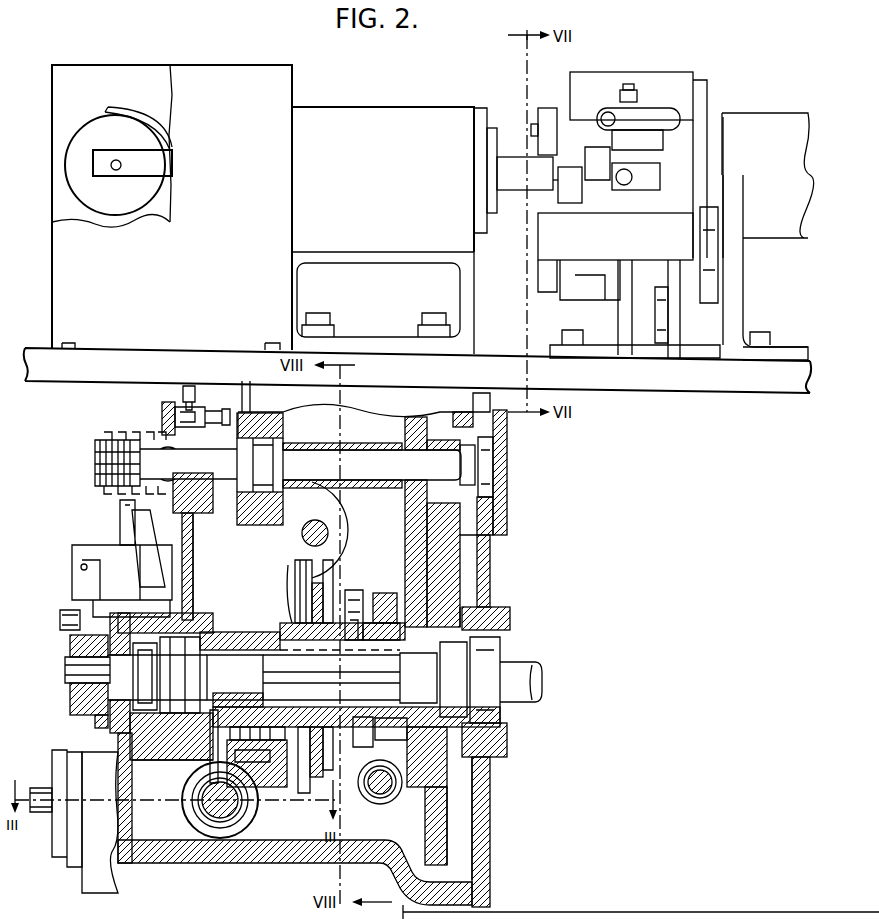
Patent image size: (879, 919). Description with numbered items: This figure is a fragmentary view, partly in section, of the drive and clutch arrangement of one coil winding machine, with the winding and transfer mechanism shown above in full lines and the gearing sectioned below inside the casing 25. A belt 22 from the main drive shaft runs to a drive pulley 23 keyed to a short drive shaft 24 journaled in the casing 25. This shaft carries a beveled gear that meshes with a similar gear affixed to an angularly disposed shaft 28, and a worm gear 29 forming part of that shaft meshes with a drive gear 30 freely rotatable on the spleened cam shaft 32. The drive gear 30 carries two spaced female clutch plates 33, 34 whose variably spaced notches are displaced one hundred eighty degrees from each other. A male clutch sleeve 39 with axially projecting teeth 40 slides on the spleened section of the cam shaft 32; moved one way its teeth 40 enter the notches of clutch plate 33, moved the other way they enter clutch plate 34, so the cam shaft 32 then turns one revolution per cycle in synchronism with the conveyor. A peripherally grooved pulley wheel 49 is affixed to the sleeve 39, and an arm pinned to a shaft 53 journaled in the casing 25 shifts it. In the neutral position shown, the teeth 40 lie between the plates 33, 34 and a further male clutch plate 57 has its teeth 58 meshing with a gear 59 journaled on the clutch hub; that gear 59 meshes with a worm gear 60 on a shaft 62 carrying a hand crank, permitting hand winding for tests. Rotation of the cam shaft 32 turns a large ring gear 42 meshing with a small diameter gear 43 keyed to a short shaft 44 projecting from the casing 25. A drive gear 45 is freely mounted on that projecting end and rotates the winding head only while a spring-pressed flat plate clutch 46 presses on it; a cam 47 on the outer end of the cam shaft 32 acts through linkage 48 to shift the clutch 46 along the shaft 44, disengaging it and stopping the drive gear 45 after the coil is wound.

The belt 22 is at (92, 885).
The drive pulley 23 is at (74, 866).
The short drive shaft 24 is at (42, 786).
The casing 25 is at (212, 865).
The angularly disposed shaft 28 is at (236, 822).
The worm gear 29 is at (202, 806).
The drive gear 30 is at (195, 770).
The spleened cam shaft 32 is at (522, 664).
The female clutch plate 33 is at (130, 740).
The female clutch plate 34 is at (285, 775).
The male clutch sleeve 39 is at (300, 588).
The teeth 40 is at (303, 681).
The ring gear 42 is at (448, 582).
The small diameter gear 43 is at (428, 490).
The short shaft 44 is at (358, 447).
The drive gear 45 is at (182, 394).
The spring-pressed flat plate clutch 46 is at (161, 416).
The cam 47 is at (70, 696).
The linkage 48 is at (130, 534).
The peripherally grooved pulley wheel 49 is at (333, 772).
The shaft 53 is at (322, 522).
The male clutch plate 57 is at (356, 597).
The teeth 58 is at (378, 600).
The gear 59 is at (470, 772).
The worm gear 60 is at (397, 796).
The shaft 62 is at (385, 800).